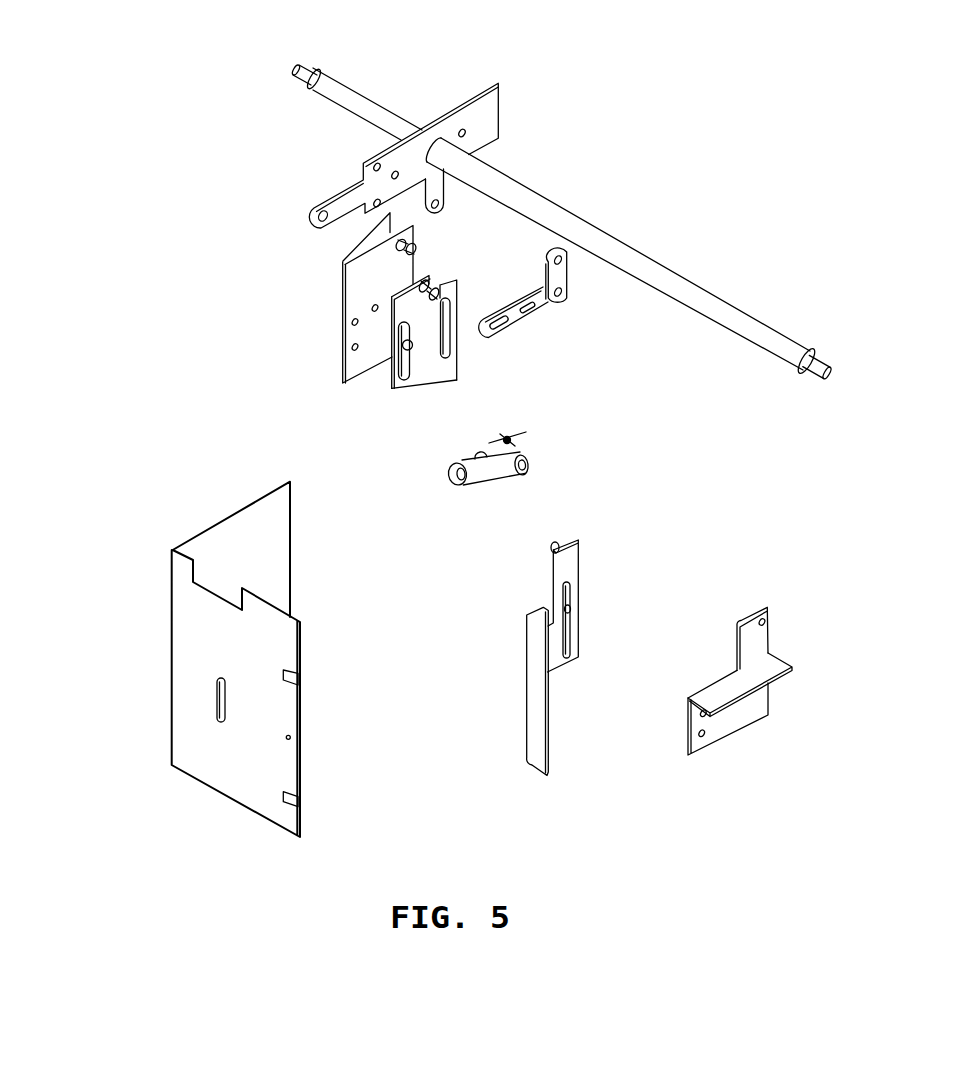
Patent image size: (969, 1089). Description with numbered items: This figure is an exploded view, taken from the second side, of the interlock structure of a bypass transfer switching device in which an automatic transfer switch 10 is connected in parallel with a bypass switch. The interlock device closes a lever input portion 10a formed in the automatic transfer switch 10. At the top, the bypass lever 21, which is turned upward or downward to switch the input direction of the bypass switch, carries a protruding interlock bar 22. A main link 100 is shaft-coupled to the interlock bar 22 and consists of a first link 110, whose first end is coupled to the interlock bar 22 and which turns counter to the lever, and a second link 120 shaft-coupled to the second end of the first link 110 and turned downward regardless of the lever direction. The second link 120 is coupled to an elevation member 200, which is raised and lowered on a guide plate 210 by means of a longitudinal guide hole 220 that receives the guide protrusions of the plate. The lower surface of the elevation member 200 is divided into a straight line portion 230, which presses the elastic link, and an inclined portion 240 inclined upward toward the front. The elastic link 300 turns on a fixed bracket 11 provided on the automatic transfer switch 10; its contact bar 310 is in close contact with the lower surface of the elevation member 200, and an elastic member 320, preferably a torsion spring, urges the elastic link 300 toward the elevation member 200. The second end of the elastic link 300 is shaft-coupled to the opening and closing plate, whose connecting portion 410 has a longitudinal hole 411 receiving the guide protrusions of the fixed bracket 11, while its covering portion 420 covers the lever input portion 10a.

The automatic transfer switch 10 is at (180, 659).
The lever input portion 10a is at (217, 699).
The fixed bracket 11 is at (735, 723).
The bypass lever 21 is at (473, 110).
The interlock bar 22 is at (438, 187).
The main link 100 is at (597, 347).
The first link 110 is at (567, 280).
The second link 120 is at (513, 317).
The elevation member 200 is at (391, 366).
The guide plate 210 is at (355, 270).
The longitudinal guide hole 220 is at (392, 366).
The straight line portion 230 is at (457, 381).
The inclined portion 240 is at (408, 392).
The elastic link 300 is at (520, 510).
The contact bar 310 is at (477, 447).
The elastic member 320 is at (513, 435).
The connecting portion 410 is at (621, 606).
The longitudinal hole 411 is at (570, 618).
The covering portion 420 is at (542, 743).